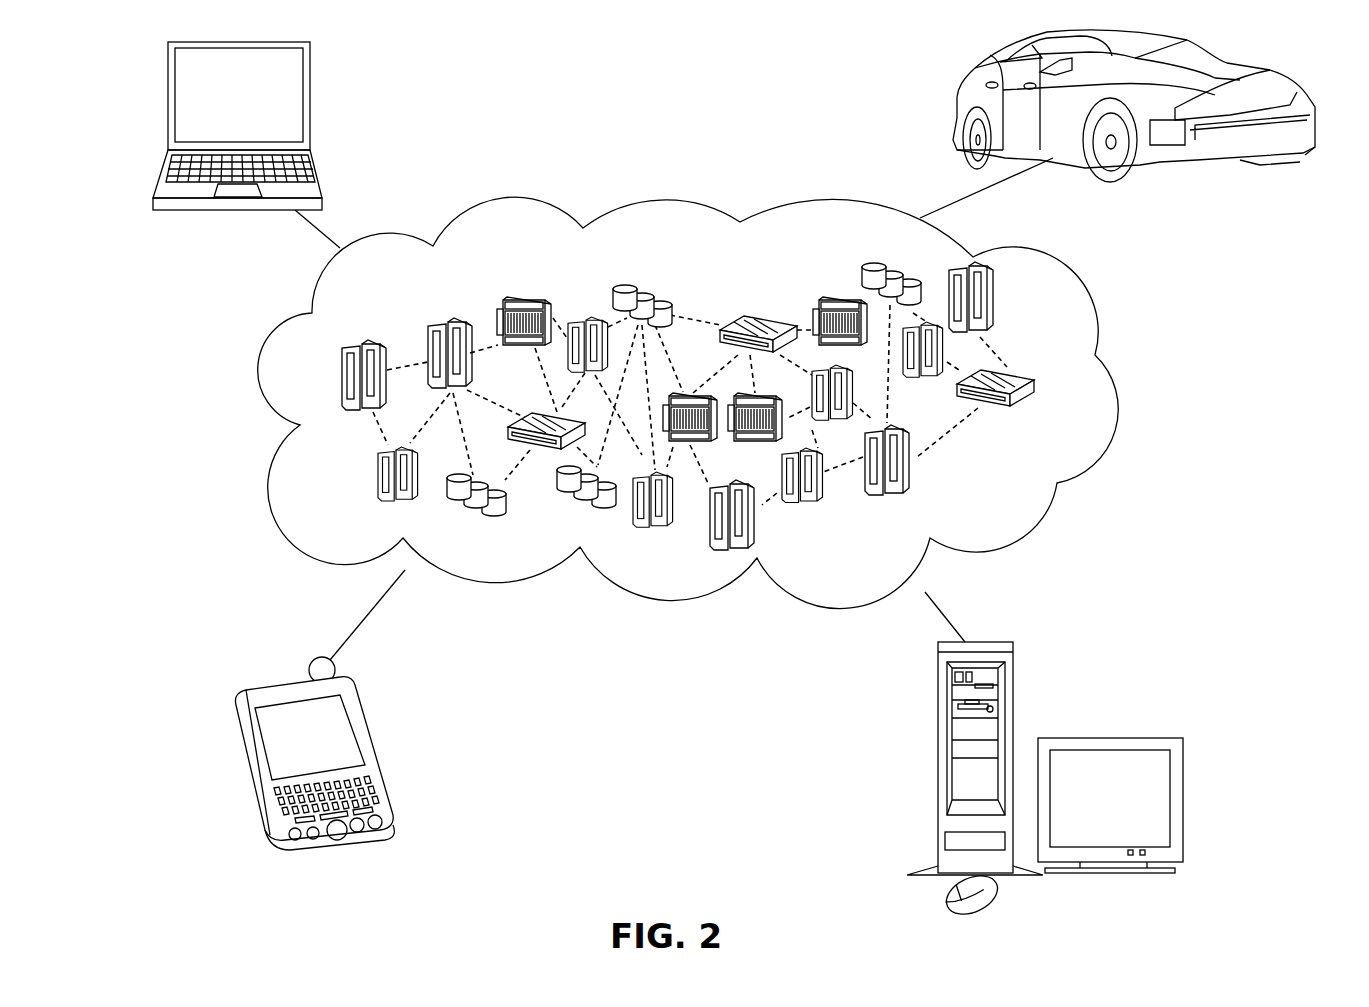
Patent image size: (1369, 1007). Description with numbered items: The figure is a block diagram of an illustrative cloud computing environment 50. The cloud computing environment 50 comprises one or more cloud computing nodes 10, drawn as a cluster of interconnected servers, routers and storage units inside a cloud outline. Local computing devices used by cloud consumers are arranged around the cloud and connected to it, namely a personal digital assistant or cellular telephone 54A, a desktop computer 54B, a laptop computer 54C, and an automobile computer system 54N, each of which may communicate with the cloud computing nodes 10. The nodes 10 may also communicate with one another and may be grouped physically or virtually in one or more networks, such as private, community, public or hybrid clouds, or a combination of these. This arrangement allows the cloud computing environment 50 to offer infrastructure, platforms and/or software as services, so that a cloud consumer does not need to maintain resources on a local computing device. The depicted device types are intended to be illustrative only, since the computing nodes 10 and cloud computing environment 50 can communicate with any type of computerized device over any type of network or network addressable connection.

The cloud computing node 10 is at (1011, 487).
The cloud computing environment 50 is at (1119, 398).
The personal digital assistant (PDA) or cellular telephone 54A is at (363, 720).
The desktop computer 54B is at (938, 705).
The laptop computer 54C is at (310, 80).
The automobile computer system 54N is at (956, 96).